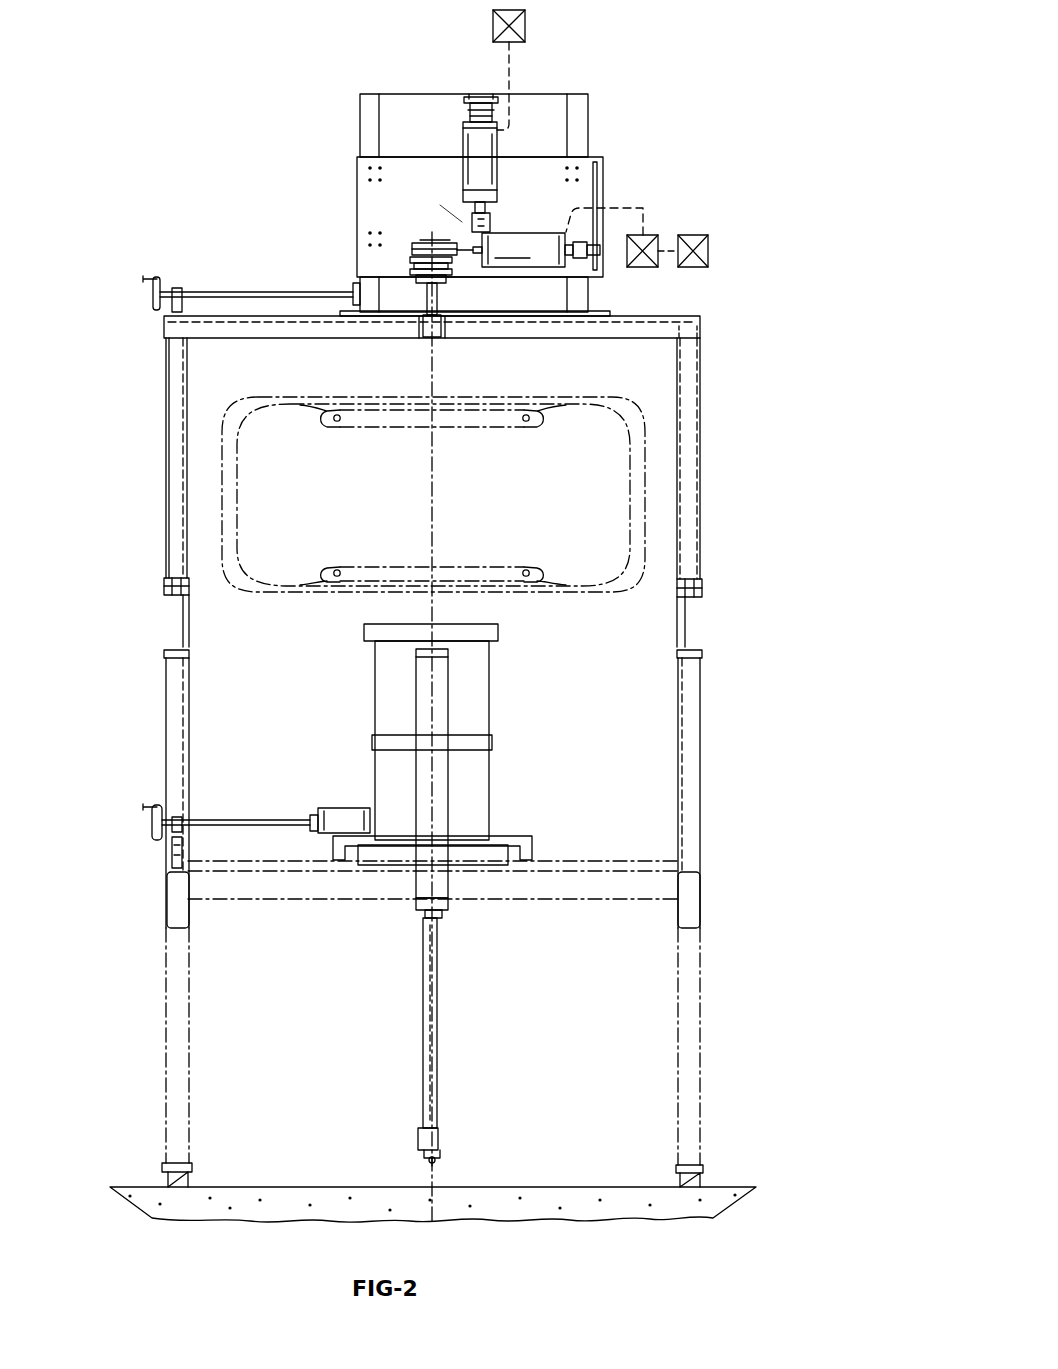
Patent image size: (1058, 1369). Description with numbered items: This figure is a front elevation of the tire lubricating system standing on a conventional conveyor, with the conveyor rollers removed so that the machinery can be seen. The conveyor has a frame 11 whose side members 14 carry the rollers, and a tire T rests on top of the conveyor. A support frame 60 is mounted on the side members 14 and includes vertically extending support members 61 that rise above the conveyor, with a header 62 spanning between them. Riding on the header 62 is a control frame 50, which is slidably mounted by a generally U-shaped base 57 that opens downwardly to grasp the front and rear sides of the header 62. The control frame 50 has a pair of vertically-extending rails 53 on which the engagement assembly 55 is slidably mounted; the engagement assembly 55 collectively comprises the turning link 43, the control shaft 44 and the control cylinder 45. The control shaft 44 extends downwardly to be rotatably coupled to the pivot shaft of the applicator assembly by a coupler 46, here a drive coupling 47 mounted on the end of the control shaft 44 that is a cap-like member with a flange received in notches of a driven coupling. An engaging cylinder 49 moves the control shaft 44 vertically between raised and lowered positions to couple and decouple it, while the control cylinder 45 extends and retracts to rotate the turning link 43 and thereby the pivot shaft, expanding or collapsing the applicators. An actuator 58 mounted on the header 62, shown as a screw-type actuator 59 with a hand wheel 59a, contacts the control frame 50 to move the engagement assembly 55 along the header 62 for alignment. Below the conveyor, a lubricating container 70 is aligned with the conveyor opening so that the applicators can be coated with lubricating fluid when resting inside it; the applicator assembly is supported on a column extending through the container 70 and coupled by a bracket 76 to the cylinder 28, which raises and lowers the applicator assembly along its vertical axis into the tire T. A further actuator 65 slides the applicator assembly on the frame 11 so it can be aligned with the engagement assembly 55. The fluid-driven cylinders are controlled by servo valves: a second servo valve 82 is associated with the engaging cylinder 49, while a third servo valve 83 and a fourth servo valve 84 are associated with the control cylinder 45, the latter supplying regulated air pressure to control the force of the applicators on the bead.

The frame 11 is at (178, 740).
The side members 14 is at (180, 630).
The cylinder 28 is at (440, 796).
The turning link 43 is at (411, 243).
The control shaft 44 is at (436, 302).
The control cylinder 45 is at (548, 244).
The coupler 46 is at (414, 334).
The drive coupling 47 is at (437, 330).
The engaging cylinder 49 is at (480, 155).
The control frame 50 is at (354, 170).
The vertically-extending rails 53 is at (372, 118).
The engagement assembly 55 is at (450, 210).
The U-shaped base 57 is at (606, 313).
The actuator 58 is at (140, 292).
The screw-type actuator 59 is at (241, 292).
The hand wheel 59a is at (157, 277).
The support frame 60 is at (158, 405).
The support members 61 is at (178, 472).
The header 62 is at (256, 330).
The actuator 65 is at (265, 806).
The lubricating container 70 is at (482, 688).
The bracket 76 is at (436, 1140).
The second servo valve 82 is at (526, 22).
The third servo valve 83 is at (650, 234).
The fourth servo valve 84 is at (700, 240).
The tire T is at (320, 582).